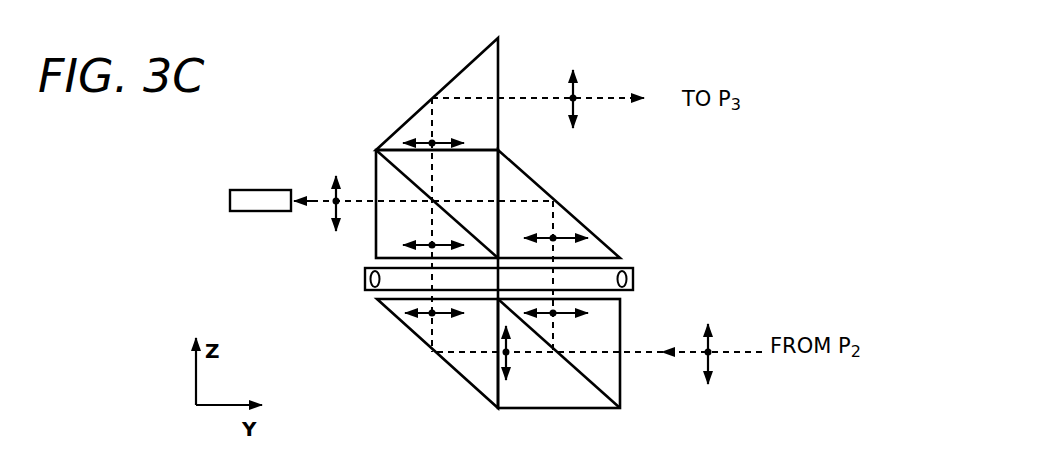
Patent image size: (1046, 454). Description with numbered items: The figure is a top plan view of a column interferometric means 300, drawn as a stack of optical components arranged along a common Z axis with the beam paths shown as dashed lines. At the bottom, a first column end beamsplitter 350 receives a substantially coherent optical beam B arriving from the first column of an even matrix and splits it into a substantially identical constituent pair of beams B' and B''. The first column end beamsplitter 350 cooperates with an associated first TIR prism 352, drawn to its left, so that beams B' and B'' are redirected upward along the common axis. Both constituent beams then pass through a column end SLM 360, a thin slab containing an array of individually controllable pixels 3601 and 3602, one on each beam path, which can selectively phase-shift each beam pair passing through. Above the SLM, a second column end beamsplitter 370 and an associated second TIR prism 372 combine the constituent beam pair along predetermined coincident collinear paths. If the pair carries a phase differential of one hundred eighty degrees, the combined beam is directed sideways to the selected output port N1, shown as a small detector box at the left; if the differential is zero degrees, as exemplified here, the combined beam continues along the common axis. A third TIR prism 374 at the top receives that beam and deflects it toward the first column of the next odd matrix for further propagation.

The optical head assembly 300 is at (522, 63).
The third TIR prism 374 is at (422, 116).
The second column end beamsplitter 370 is at (383, 174).
The second TIR prism 372 is at (523, 184).
The column end SLM 360 is at (491, 285).
The individually controllable pixel 3601 is at (371, 274).
The individually controllable pixel 3602 is at (628, 279).
The first TIR prism 352 is at (461, 364).
The first column end beamsplitter 350 is at (612, 380).
The output port N1 is at (271, 220).
The optical beam B is at (747, 385).
The constituent beam B' is at (528, 373).
The constituent beam B'' is at (578, 336).